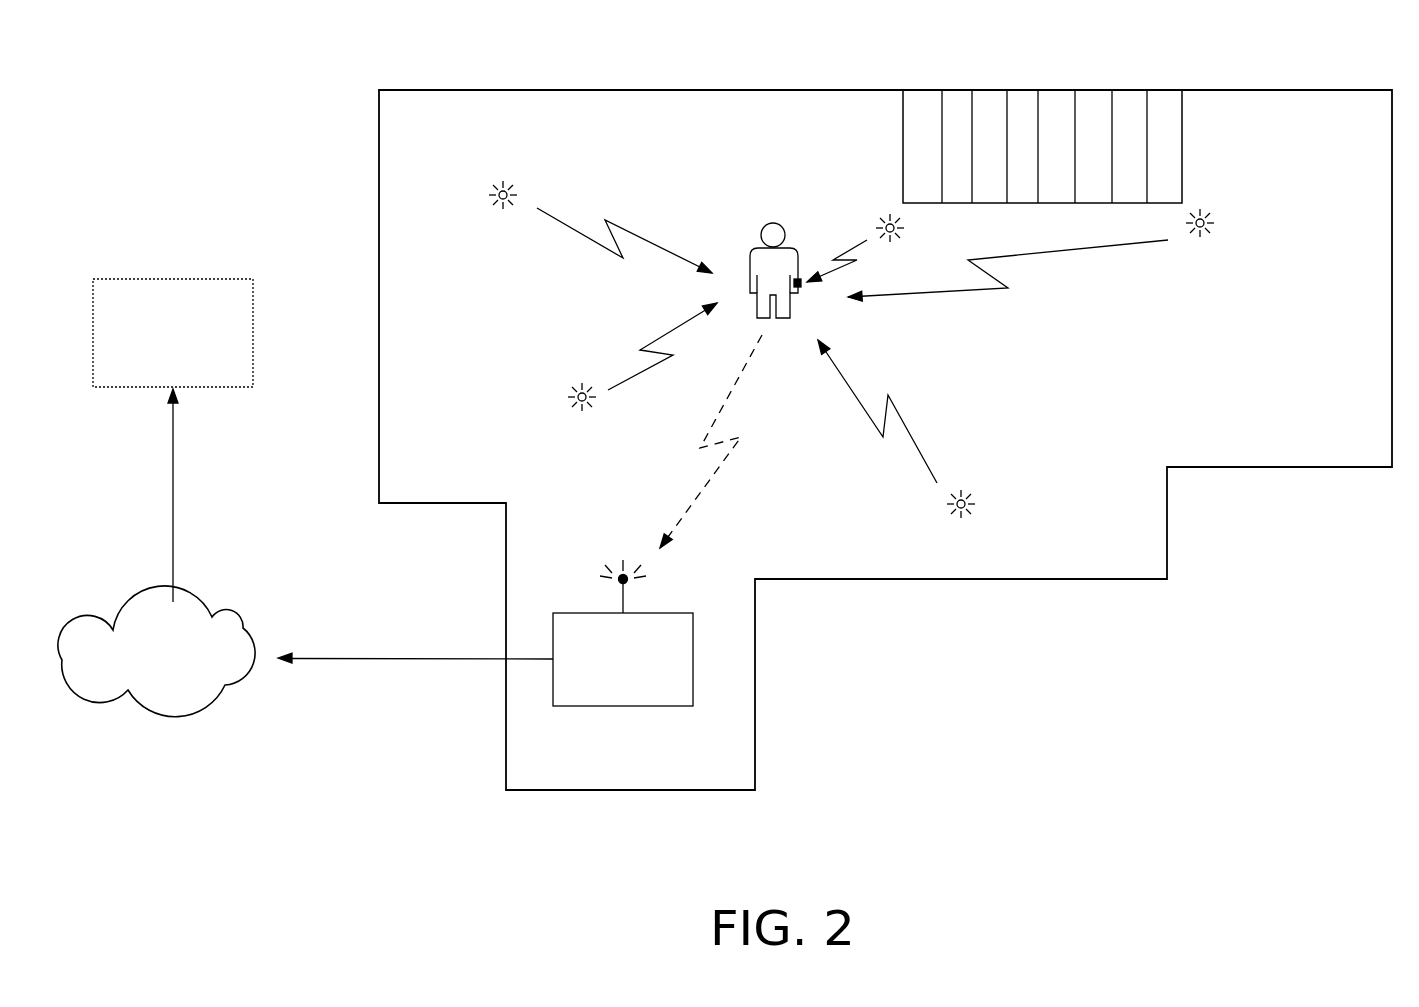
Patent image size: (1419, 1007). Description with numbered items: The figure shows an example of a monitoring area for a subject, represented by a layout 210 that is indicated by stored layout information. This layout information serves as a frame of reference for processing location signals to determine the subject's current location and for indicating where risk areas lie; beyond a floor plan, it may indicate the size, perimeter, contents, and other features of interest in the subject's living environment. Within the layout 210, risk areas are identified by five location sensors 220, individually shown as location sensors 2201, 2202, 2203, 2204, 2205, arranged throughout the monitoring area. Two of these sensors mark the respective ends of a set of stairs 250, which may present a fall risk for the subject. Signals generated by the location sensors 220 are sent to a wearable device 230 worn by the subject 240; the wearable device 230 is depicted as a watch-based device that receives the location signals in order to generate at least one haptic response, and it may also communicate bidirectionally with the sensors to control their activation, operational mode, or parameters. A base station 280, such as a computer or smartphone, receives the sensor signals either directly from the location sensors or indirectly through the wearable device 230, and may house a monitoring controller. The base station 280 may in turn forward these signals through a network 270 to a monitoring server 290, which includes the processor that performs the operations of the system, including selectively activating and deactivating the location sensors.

The layout 210 is at (658, 90).
The location sensors 220 is at (850, 335).
The location sensor 2201 is at (855, 233).
The location sensor 2202 is at (1050, 255).
The location sensor 2203 is at (919, 429).
The location sensor 2204 is at (619, 357).
The location sensor 2205 is at (579, 212).
The wearable device 230 is at (800, 289).
The subject 240 is at (762, 228).
The set of stairs 250 is at (1182, 167).
The network 270 is at (235, 615).
The base station 280 is at (662, 611).
The monitoring server 290 is at (212, 277).